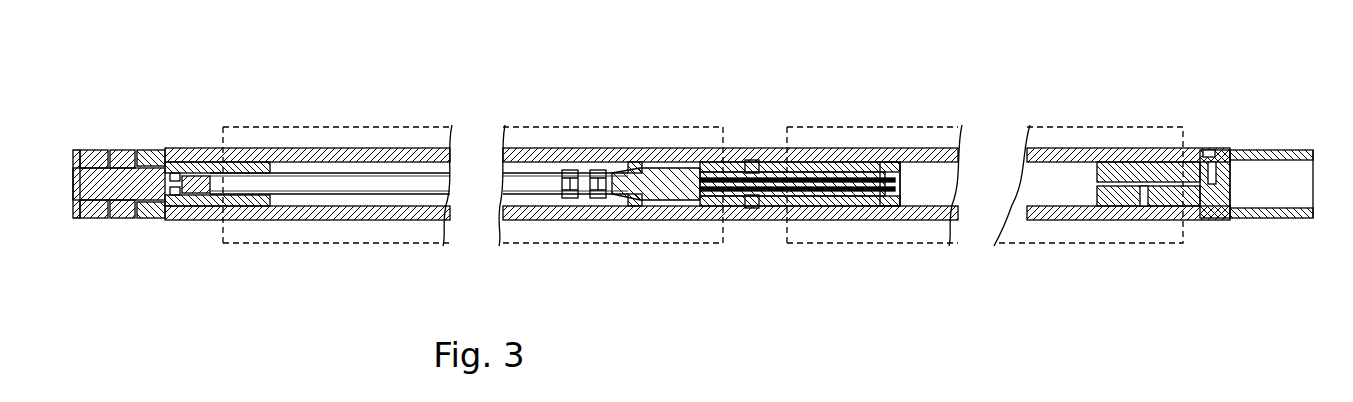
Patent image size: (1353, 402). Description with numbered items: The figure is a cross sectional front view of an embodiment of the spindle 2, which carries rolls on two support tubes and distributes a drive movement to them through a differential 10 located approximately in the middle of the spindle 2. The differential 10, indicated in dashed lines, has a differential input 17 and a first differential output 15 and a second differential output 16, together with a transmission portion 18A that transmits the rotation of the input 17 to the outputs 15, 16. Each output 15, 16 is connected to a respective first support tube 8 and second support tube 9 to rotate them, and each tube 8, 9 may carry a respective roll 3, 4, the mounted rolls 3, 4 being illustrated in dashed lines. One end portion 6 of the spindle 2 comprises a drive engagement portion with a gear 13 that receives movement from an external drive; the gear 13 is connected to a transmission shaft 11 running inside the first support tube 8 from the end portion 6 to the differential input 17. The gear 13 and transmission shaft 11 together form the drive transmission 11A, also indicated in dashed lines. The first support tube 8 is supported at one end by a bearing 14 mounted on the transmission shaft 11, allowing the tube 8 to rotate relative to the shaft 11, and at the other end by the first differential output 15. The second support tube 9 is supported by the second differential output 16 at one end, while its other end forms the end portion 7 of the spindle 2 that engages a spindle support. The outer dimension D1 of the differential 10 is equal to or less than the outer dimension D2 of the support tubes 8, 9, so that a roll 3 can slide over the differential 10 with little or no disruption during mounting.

The spindle 2 is at (950, 256).
The roll 3 is at (427, 127).
The roll 4 is at (1135, 243).
The end portion 6 is at (78, 140).
The end portion 7 is at (1276, 135).
The first support tube 8 is at (318, 127).
The second support tube 9 is at (925, 148).
The differential 10 is at (843, 175).
The transmission shaft 11 is at (354, 190).
The drive transmission 11A is at (216, 203).
The gear 13 is at (118, 220).
The bearing 14 is at (148, 148).
The first differential output 15 is at (745, 148).
The second differential output 16 is at (802, 150).
The differential input 17 is at (650, 190).
The transmission portion 18A is at (766, 236).
The outer dimension of the differential D1 is at (753, 268).
The outer dimension of the support tubes D2 is at (1080, 280).